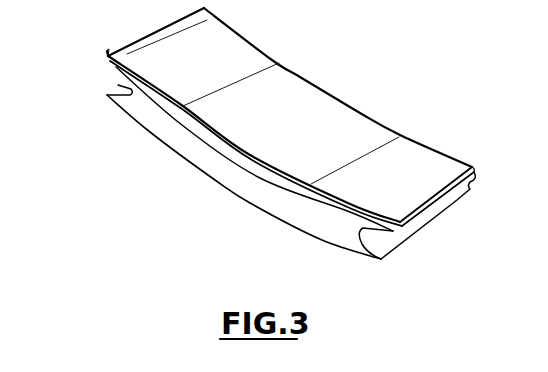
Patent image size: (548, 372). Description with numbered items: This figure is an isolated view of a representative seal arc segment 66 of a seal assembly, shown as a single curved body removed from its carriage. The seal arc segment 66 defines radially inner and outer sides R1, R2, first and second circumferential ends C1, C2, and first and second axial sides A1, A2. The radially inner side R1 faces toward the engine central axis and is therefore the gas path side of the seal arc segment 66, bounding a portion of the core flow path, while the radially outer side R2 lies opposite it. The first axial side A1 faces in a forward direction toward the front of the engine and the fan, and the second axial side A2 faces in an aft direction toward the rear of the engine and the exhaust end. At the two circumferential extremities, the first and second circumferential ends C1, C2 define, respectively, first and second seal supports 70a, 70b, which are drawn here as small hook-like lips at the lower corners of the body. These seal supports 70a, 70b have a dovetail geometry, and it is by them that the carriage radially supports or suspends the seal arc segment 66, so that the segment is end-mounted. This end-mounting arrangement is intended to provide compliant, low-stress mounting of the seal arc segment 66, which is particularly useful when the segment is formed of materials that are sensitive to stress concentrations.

The seal arc segment 66 is at (256, 152).
The first axial side A1 is at (250, 181).
The second axial side A2 is at (291, 117).
The radially inner side R1 is at (437, 140).
The radially outer side R2 is at (320, 262).
The first circumferential end C1 is at (445, 240).
The second circumferential end C2 is at (90, 47).
The first seal support 70a is at (392, 252).
The second seal support 70b is at (110, 81).